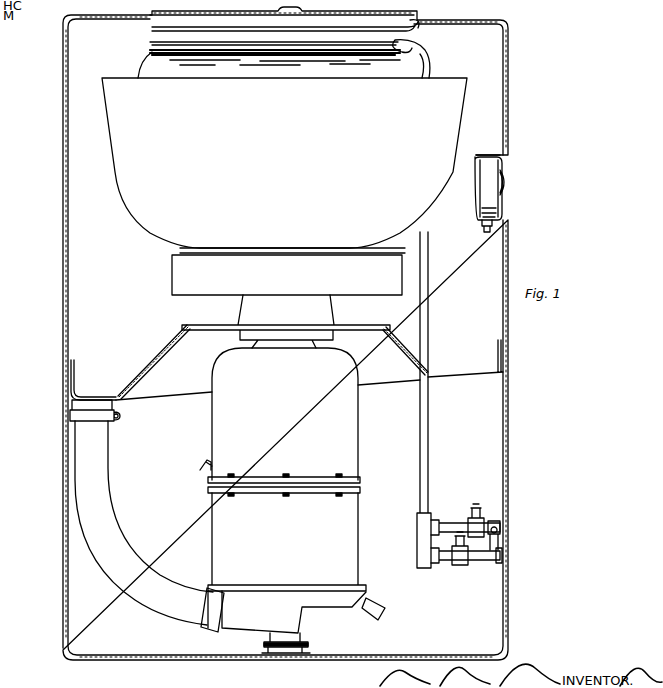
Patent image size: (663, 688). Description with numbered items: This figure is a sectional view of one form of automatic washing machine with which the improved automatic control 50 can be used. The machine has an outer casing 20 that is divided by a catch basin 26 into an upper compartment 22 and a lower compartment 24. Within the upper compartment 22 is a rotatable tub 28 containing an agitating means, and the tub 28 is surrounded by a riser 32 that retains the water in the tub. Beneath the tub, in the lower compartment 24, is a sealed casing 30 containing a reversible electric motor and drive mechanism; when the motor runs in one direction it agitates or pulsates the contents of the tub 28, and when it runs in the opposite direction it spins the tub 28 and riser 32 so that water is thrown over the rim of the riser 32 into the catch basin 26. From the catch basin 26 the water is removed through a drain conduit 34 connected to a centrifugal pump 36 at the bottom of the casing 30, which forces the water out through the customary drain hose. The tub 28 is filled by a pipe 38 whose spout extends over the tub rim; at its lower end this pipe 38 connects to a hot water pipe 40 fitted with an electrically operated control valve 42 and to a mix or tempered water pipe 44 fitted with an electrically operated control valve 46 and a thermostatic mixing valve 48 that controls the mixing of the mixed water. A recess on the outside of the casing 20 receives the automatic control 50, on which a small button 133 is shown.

The outer casing 20 is at (63, 290).
The upper compartment 22 is at (130, 274).
The lower compartment 24 is at (159, 497).
The catch basin 26 is at (440, 368).
The rotatable tub 28 is at (440, 70).
The sealed casing 30 is at (358, 425).
The riser 32 is at (112, 134).
The drain conduit 34 is at (120, 540).
The centrifugal pump 36 is at (302, 628).
The pipe 38 is at (430, 415).
The hot water pipe 40 is at (478, 562).
The electrically operated control valve 42 is at (458, 566).
The mix or tempered water pipe 44 is at (453, 523).
The electrically operated control valve 46 is at (470, 513).
The thermostatic mixing valve 48 is at (495, 521).
The automatic control 50 is at (500, 200).
The control button 133 is at (505, 176).